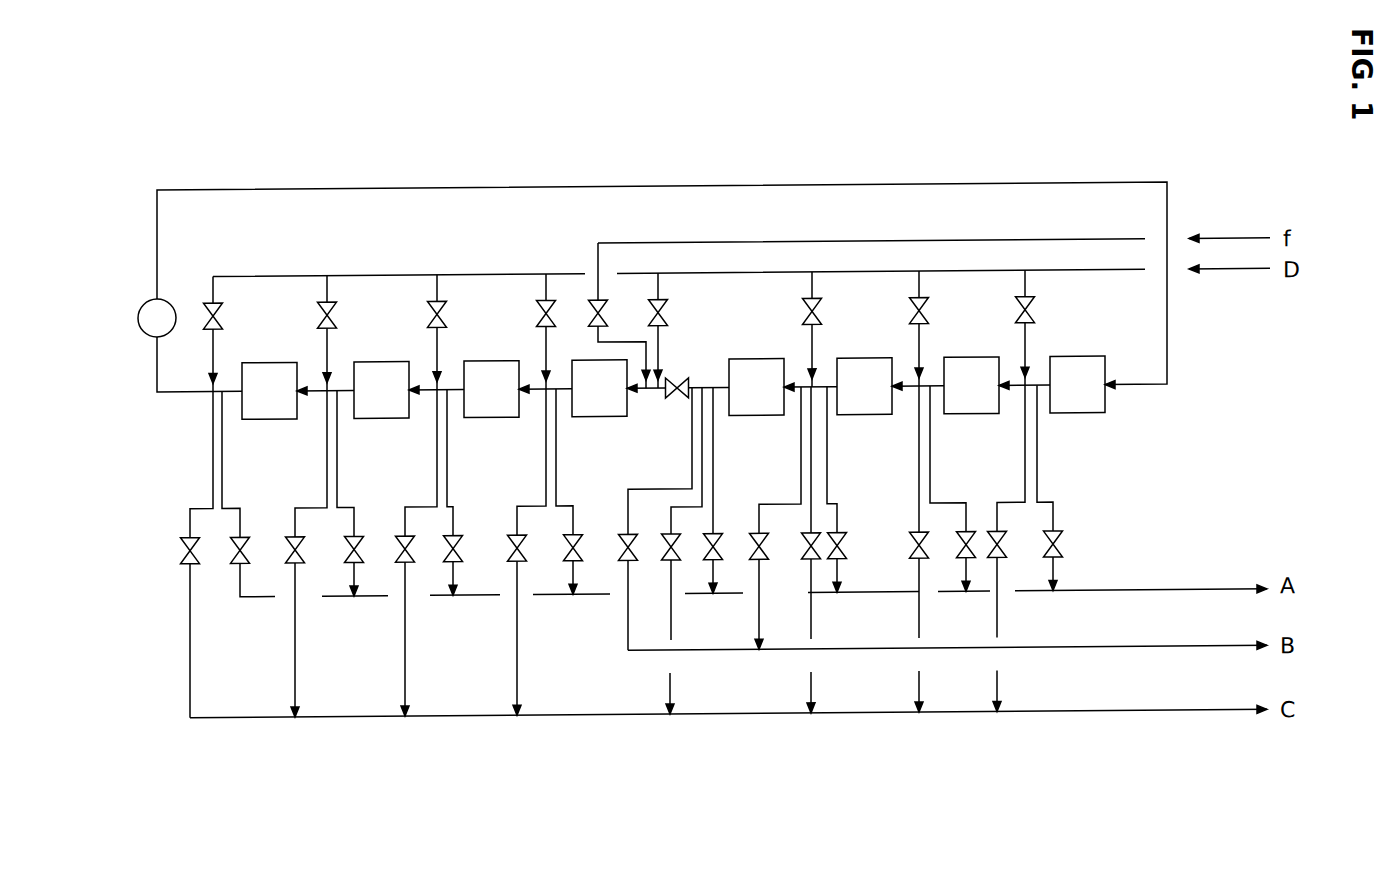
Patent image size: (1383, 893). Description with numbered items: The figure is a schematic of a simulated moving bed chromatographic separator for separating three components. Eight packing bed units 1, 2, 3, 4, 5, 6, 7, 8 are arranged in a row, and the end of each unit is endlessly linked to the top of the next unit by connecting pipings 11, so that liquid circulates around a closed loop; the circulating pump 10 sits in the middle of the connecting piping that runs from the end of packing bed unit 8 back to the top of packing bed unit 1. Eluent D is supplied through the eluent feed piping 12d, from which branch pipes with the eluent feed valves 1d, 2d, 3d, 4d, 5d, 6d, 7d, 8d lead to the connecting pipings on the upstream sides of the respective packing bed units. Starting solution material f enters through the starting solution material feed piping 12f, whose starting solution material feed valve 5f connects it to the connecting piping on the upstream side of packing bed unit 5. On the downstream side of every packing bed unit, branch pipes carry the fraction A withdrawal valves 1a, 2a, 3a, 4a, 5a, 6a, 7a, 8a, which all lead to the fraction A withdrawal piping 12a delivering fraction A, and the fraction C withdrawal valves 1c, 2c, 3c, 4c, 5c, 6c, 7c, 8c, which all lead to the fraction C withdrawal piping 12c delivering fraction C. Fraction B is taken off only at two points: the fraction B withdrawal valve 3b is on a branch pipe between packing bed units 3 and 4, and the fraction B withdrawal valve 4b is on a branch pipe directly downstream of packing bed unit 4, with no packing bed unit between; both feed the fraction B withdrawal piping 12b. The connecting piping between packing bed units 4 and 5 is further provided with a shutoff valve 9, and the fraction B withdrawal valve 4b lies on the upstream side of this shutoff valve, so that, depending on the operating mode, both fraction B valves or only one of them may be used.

The packing bed unit 1 is at (1077, 420).
The packing bed unit 2 is at (970, 420).
The packing bed unit 3 is at (863, 420).
The packing bed unit 4 is at (755, 420).
The packing bed unit 5 is at (598, 420).
The packing bed unit 6 is at (490, 420).
The packing bed unit 7 is at (380, 420).
The packing bed unit 8 is at (268, 420).
The shutoff valve 9 is at (672, 402).
The circulating pump 10 is at (144, 332).
The connecting pipings 11 is at (1120, 190).
The fraction A withdrawal piping 12a is at (1176, 598).
The fraction B withdrawal piping 12b is at (1185, 654).
The fraction C withdrawal piping 12c is at (1107, 718).
The eluent feed piping 12d is at (972, 277).
The starting solution material feed piping 12f is at (1047, 246).
The fraction A withdrawal valve 1a is at (1062, 553).
The fraction C withdrawal valve 1c is at (1005, 549).
The eluent feed valve 1d is at (222, 317).
The fraction A withdrawal valve 2a is at (970, 562).
The fraction C withdrawal valve 2c is at (909, 549).
The eluent feed valve 2d is at (1034, 317).
The fraction A withdrawal valve 3a is at (848, 553).
The fraction B withdrawal valve 3b is at (750, 566).
The fraction C withdrawal valve 3c is at (805, 563).
The eluent feed valve 3d is at (928, 317).
The fraction A withdrawal valve 4a is at (707, 566).
The fraction B withdrawal valve 4b is at (628, 566).
The fraction C withdrawal valve 4c is at (663, 566).
The eluent feed valve 4d is at (821, 317).
The fraction A withdrawal valve 5a is at (560, 553).
The fraction C withdrawal valve 5c is at (525, 566).
The eluent feed valve 5d is at (668, 317).
The starting solution material feed valve 5f is at (589, 317).
The fraction A withdrawal valve 6a is at (460, 572).
The fraction C withdrawal valve 6c is at (412, 572).
The eluent feed valve 6d is at (540, 317).
The fraction A withdrawal valve 7a is at (361, 572).
The fraction C withdrawal valve 7c is at (303, 570).
The eluent feed valve 7d is at (446, 317).
The fraction A withdrawal valve 8a is at (247, 573).
The fraction C withdrawal valve 8c is at (200, 570).
The eluent feed valve 8d is at (336, 317).